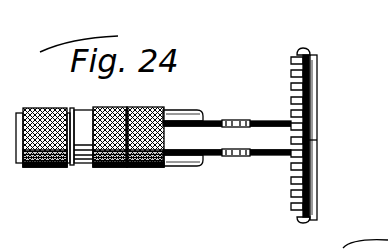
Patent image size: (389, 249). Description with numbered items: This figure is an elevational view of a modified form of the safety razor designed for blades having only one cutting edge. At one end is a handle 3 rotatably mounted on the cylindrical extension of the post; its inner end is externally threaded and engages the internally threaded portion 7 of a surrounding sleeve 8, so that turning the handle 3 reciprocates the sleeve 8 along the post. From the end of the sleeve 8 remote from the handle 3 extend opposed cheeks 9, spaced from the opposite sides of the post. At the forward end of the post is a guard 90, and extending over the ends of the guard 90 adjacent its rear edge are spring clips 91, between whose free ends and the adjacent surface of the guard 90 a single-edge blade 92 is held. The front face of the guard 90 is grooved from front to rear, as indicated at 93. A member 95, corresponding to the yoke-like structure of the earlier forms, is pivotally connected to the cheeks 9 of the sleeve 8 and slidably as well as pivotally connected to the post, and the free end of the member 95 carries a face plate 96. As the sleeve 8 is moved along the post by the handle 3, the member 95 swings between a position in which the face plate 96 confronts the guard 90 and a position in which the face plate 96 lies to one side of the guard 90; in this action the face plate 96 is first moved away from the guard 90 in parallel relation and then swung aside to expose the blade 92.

The handle 3 is at (44, 108).
The sleeve 8 is at (118, 169).
The cheeks 9 is at (191, 111).
The internally threaded portion 7 is at (274, 146).
The member 95 is at (241, 157).
The guard 90 is at (291, 73).
The spring clips 91 is at (304, 48).
The blade 92 is at (310, 142).
The groove 93 is at (304, 124).
The face plate 96 is at (318, 178).